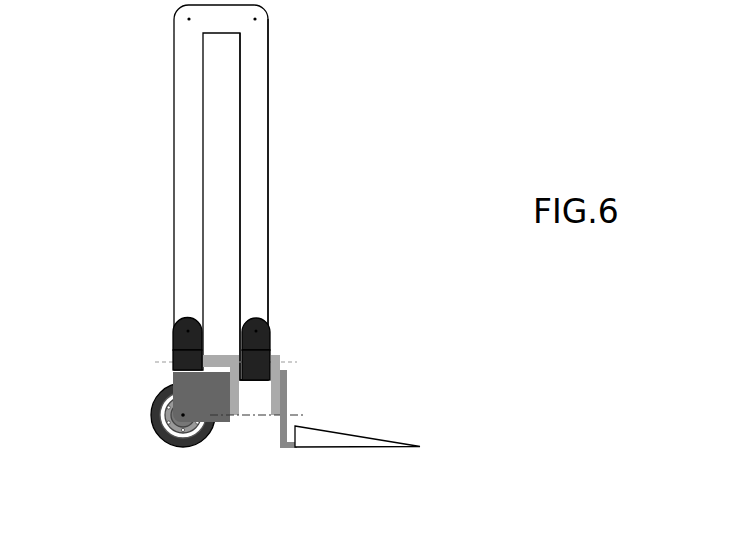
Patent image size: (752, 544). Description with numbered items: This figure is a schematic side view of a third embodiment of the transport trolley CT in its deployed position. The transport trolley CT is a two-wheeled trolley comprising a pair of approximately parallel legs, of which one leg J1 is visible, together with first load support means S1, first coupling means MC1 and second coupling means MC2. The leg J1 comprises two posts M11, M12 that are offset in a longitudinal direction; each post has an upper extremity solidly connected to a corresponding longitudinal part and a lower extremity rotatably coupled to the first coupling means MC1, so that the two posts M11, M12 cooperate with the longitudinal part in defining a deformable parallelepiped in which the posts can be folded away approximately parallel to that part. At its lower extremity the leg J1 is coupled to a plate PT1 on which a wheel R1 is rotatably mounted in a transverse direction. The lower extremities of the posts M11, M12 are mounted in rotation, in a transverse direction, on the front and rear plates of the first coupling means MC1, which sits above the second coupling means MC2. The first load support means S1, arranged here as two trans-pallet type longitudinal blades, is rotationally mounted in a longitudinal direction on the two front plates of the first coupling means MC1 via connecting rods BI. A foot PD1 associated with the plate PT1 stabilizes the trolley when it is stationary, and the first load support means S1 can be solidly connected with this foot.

The transport trolley CT is at (231, 255).
The leg J1 is at (220, 104).
The post M12 is at (174, 153).
The post M11 is at (268, 95).
The first coupling means MC1 is at (185, 323).
The second coupling means MC2 is at (173, 353).
The plate PT1 is at (185, 378).
The wheel R1 is at (152, 413).
The foot PD1 is at (287, 407).
The first load support means S1 is at (347, 430).
The connecting rods BI is at (235, 417).